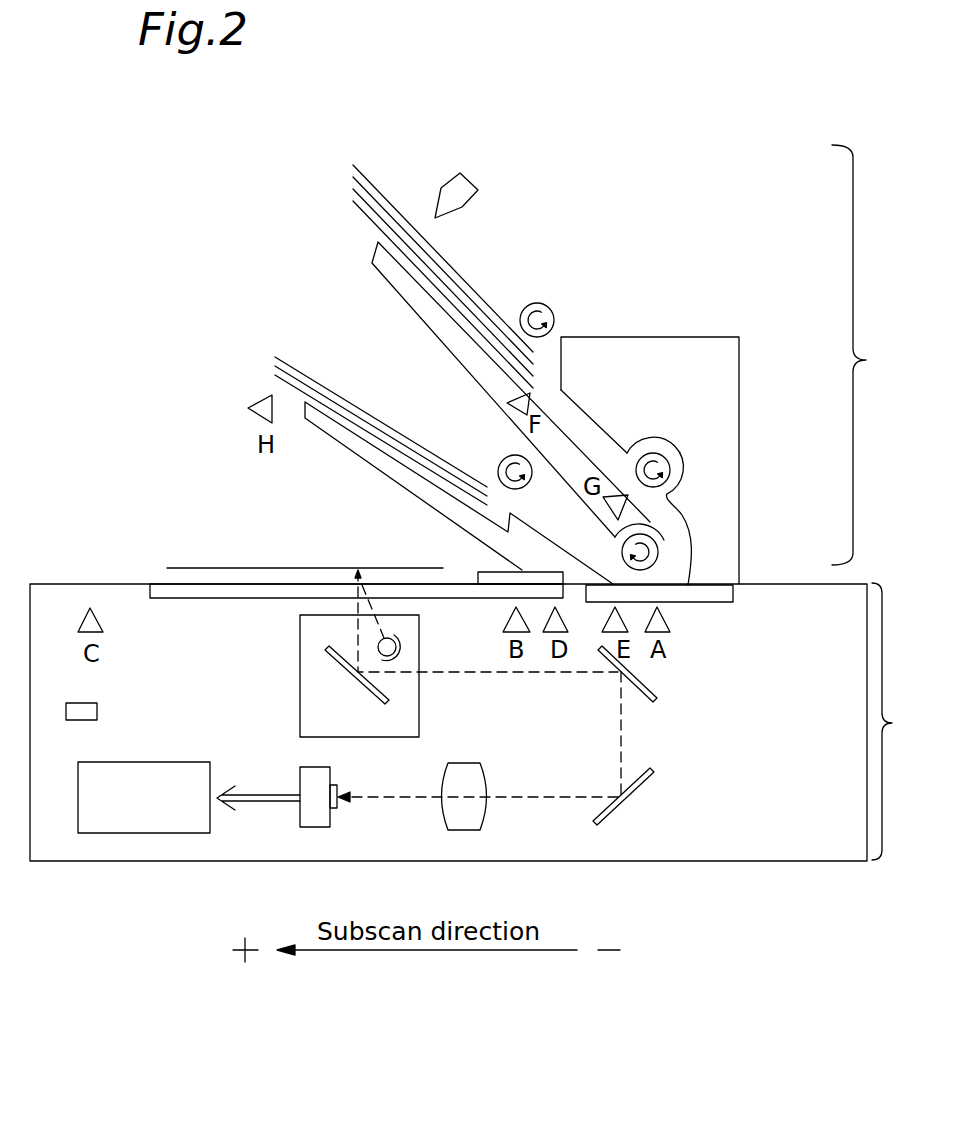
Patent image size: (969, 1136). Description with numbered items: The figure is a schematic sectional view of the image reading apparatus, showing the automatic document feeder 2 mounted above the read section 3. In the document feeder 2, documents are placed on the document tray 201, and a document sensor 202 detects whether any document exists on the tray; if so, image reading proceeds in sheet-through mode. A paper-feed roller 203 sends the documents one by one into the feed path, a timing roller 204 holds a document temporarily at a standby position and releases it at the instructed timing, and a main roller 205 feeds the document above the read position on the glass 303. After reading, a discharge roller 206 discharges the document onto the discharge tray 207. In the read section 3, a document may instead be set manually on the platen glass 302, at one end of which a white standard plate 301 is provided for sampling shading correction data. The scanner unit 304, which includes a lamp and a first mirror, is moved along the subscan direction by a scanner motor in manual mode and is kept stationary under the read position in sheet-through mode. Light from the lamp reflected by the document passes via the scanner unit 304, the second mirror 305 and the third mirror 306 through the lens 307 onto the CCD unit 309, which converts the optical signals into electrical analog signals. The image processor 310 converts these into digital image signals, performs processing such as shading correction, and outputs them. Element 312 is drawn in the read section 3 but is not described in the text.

The document feeder 2 is at (858, 355).
The read section 3 is at (472, 722).
The document tray 201 is at (388, 282).
The document sensor 202 is at (460, 205).
The paper-feed roller 203 is at (556, 313).
The timing roller 204 is at (658, 452).
The main roller 205 is at (664, 540).
The discharge roller 206 is at (498, 462).
The discharge tray 207 is at (340, 444).
The white standard plate 301 is at (488, 571).
The platen glass 302 is at (173, 598).
The glass 303 is at (718, 603).
The scanner unit 304 is at (300, 678).
The second mirror 305 is at (648, 687).
The third mirror 306 is at (642, 790).
The lens 307 is at (487, 815).
The CCD unit 309 is at (330, 820).
The image processor 310 is at (160, 762).
The position sensor 312 is at (97, 712).